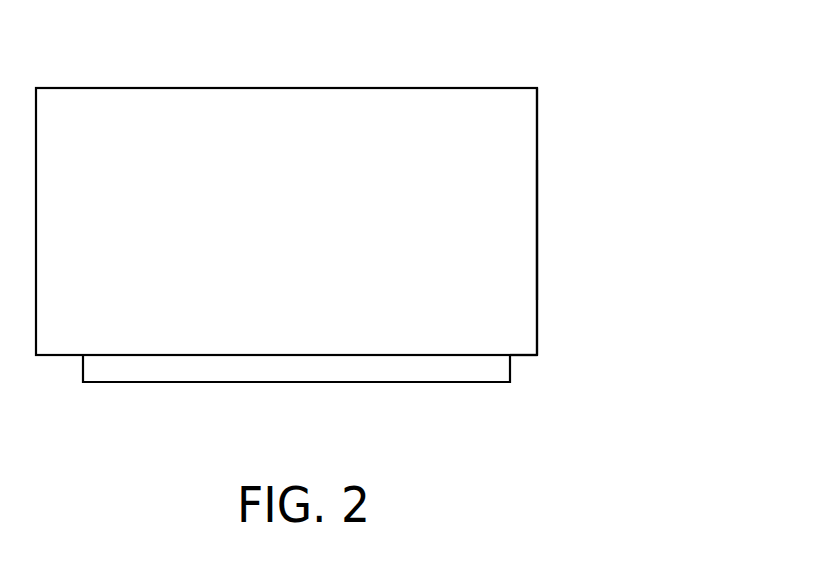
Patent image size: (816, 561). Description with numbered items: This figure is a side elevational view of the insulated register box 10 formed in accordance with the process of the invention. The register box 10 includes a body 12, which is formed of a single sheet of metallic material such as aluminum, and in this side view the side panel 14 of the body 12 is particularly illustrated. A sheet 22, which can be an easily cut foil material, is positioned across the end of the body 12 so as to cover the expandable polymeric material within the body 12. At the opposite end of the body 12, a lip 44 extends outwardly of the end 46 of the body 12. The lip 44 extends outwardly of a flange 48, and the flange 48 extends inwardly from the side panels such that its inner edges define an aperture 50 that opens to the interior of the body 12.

The register box 10 is at (532, 46).
The body 12 is at (530, 292).
The side panel 14 is at (525, 241).
The sheet 22 is at (469, 87).
The lip 44 is at (470, 383).
The end 46 is at (527, 357).
The flange 48 is at (63, 357).
The aperture 50 is at (285, 383).